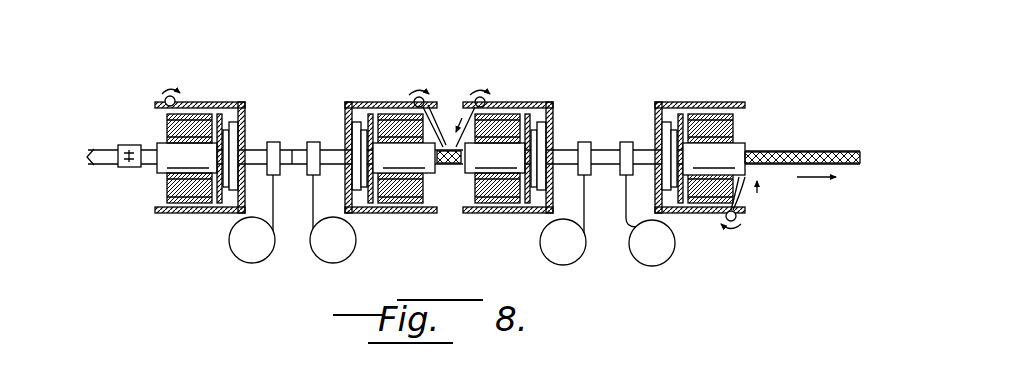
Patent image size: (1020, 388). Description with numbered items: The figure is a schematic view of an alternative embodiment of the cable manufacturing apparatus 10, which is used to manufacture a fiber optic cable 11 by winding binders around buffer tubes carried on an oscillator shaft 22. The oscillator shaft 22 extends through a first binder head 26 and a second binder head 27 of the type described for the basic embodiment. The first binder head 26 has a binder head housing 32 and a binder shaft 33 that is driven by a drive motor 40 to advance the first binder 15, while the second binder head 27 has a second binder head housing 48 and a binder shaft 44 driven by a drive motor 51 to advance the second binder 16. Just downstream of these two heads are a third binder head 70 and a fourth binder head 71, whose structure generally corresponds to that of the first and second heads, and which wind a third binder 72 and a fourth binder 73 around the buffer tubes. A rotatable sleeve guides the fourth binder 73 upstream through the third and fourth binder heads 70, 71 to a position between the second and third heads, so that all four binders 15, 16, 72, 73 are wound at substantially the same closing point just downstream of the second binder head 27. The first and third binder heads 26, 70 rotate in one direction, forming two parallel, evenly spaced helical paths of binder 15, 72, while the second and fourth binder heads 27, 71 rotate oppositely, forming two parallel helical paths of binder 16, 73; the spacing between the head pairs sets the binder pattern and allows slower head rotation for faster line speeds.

The cable manufacturing apparatus 10 is at (491, 144).
The fiber optic cable 11 is at (863, 149).
The first binder 15 is at (142, 132).
The second binder 16 is at (440, 130).
The oscillator shaft 22 is at (149, 167).
The first binder head 26 is at (187, 90).
The second binder head 27 is at (353, 97).
The binder head housing 32 is at (237, 102).
The binder shaft 33 is at (255, 148).
The drive motor 40 is at (229, 240).
The binder shaft 44 is at (338, 148).
The second binder head housing 48 is at (383, 101).
The drive motor 51 is at (318, 257).
The third binder head 70 is at (566, 101).
The fourth binder head 71 is at (714, 93).
The third binder 72 is at (510, 103).
The fourth binder 73 is at (745, 205).